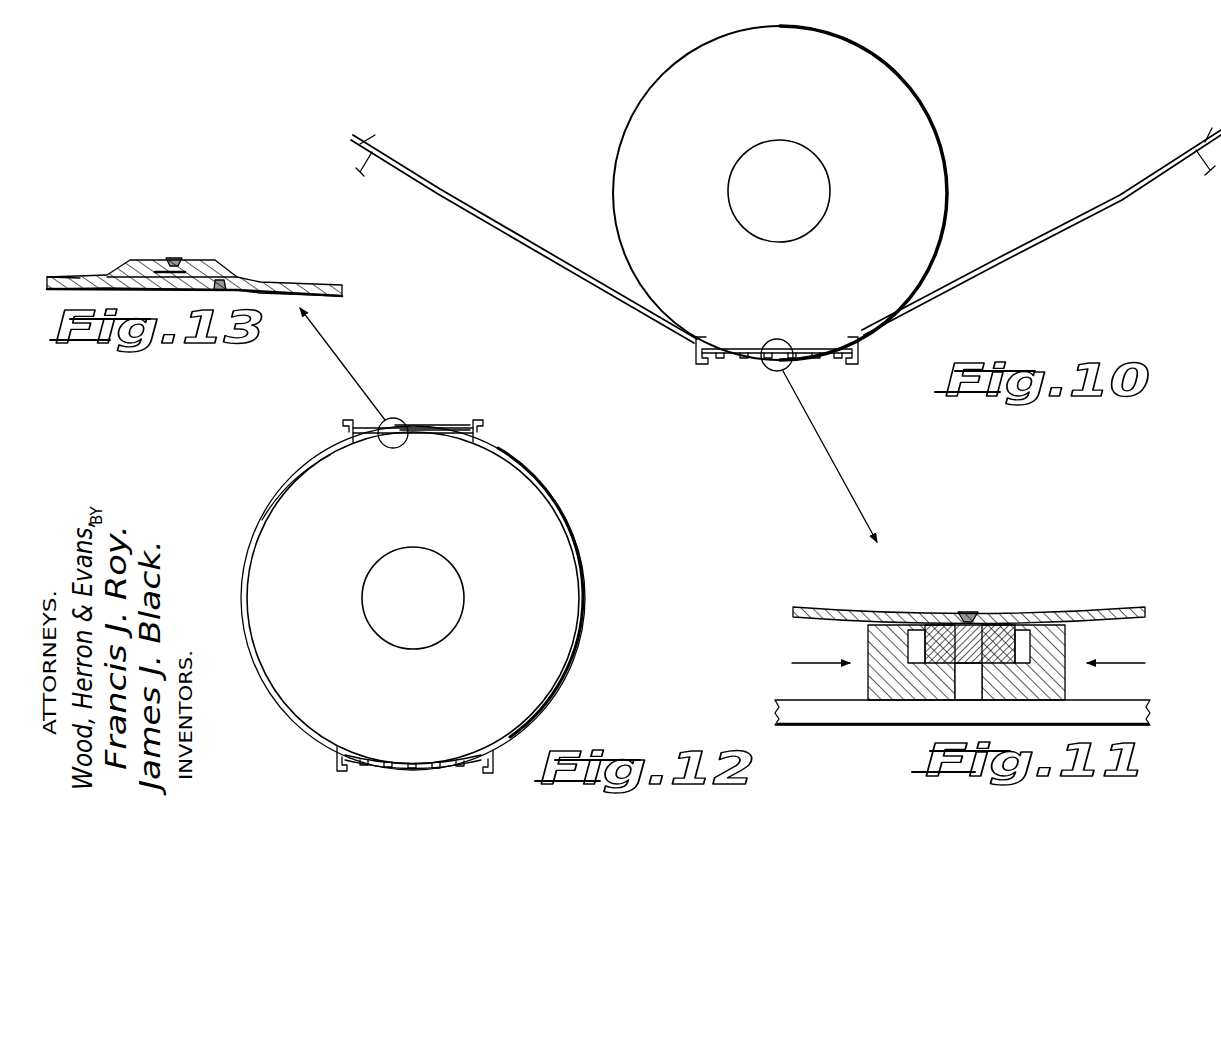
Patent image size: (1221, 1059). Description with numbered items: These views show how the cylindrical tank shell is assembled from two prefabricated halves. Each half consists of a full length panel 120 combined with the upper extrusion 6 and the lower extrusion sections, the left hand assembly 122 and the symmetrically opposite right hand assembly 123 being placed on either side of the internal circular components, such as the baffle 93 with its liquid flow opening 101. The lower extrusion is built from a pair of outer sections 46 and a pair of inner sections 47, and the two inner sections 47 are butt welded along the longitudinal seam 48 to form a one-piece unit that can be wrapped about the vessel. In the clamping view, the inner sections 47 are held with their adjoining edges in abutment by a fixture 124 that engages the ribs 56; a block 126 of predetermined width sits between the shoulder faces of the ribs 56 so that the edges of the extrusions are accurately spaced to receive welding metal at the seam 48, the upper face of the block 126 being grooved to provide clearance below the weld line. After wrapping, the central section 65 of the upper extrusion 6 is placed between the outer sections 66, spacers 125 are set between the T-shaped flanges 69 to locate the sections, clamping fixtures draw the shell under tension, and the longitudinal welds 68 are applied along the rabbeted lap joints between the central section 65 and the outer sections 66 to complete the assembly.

In FIG. 12, the upper extrusion 6 is at (456, 426).
In FIG. 13, the upper extrusion 6 is at (130, 258).
In FIG. 12, the outer section 46 is at (360, 760).
In FIG. 10, the inner section 47 is at (741, 349).
In FIG. 12, the inner section 47 is at (426, 764).
In FIG. 11, the inner section 47 is at (852, 608).
In FIG. 11, the longitudinal weld line 48 is at (968, 611).
In FIG. 11, the longitudinal rib 56 is at (912, 644).
In FIG. 12, the central section 65 is at (422, 428).
In FIG. 13, the central section 65 is at (286, 280).
In FIG. 10, the outer section 66 is at (372, 154).
In FIG. 13, the outer section 66 is at (82, 278).
In FIG. 13, the longitudinal weld 68 is at (174, 258).
In FIG. 10, the T-shaped flange 69 is at (372, 174).
In FIG. 12, the T-shaped flange 69 is at (343, 432).
In FIG. 10, the internal baffle 93 is at (915, 107).
In FIG. 12, the internal baffle 93 is at (546, 532).
In FIG. 10, the opening 101 is at (812, 186).
In FIG. 12, the opening 101 is at (447, 592).
In FIG. 10, the full length panel 120 is at (786, 236).
In FIG. 12, the full length panel 120 is at (393, 598).
In FIG. 10, the left hand assembly 122 is at (514, 243).
In FIG. 12, the left hand assembly 122 is at (262, 518).
In FIG. 10, the right hand assembly 123 is at (1071, 228).
In FIG. 11, the fixture 124 is at (880, 688).
In FIG. 12, the spacer 125 is at (380, 426).
In FIG. 11, the block 126 is at (1005, 630).